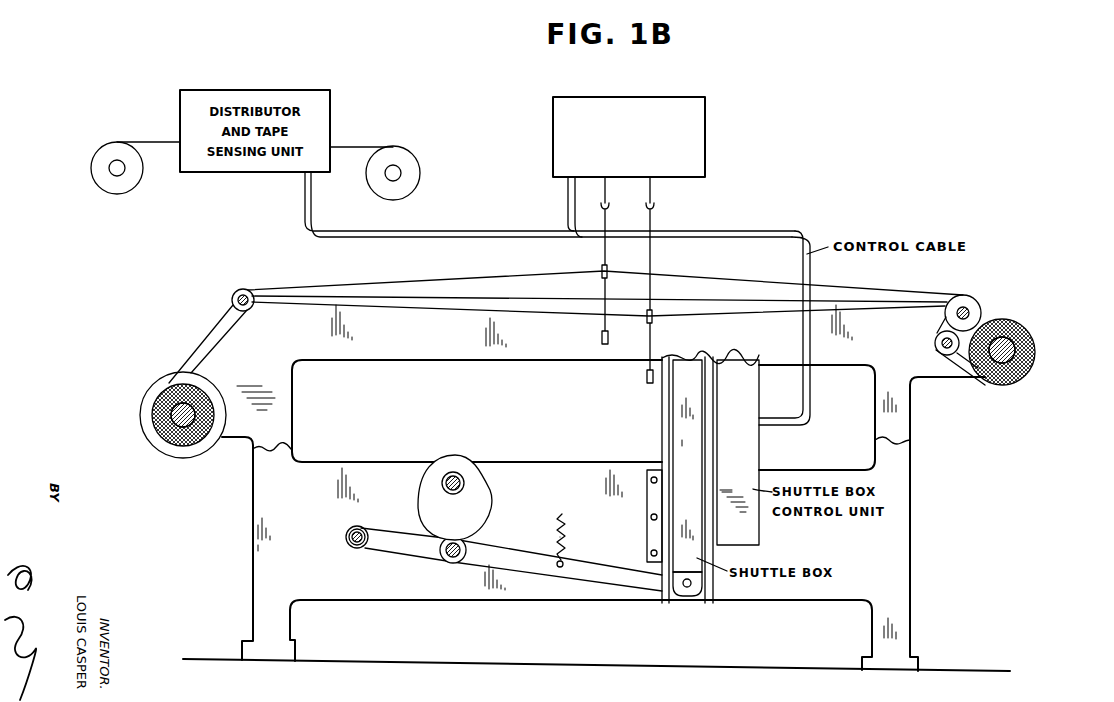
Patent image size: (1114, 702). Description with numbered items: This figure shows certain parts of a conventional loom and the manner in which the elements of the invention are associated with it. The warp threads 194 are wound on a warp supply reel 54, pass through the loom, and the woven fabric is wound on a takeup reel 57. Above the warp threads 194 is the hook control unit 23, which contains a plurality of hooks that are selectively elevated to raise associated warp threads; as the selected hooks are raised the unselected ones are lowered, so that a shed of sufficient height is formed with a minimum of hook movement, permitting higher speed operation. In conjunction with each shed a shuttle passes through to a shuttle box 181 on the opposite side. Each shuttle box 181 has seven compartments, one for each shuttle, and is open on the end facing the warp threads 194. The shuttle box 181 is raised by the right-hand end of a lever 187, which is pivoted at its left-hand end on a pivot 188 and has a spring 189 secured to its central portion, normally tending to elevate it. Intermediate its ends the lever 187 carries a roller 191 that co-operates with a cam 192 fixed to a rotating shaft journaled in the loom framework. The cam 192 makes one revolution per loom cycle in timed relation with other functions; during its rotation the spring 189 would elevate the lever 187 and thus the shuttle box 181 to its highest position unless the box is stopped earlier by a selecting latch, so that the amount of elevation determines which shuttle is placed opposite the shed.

The hook control unit 23 is at (702, 132).
The warp supply reel 54 is at (158, 400).
The takeup reel 57 is at (1036, 350).
The shuttle box 181 is at (680, 437).
The lever 187 is at (619, 572).
The pivot 188 is at (346, 537).
The spring 189 is at (563, 513).
The roller 191 is at (445, 558).
The cam 192 is at (483, 500).
The warp threads 194 is at (472, 303).